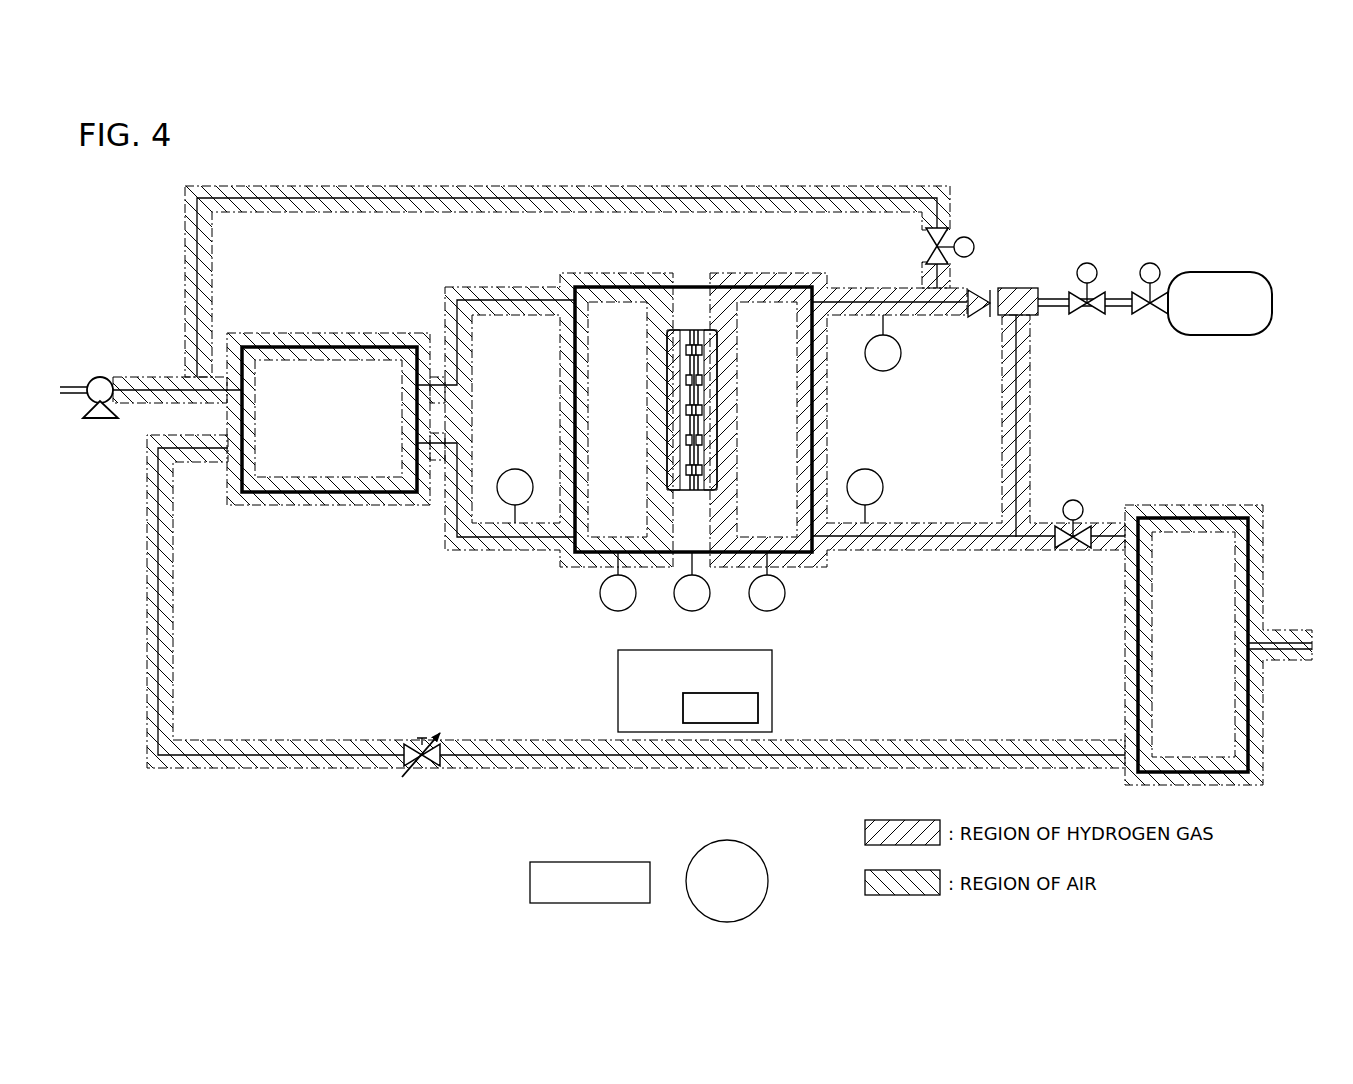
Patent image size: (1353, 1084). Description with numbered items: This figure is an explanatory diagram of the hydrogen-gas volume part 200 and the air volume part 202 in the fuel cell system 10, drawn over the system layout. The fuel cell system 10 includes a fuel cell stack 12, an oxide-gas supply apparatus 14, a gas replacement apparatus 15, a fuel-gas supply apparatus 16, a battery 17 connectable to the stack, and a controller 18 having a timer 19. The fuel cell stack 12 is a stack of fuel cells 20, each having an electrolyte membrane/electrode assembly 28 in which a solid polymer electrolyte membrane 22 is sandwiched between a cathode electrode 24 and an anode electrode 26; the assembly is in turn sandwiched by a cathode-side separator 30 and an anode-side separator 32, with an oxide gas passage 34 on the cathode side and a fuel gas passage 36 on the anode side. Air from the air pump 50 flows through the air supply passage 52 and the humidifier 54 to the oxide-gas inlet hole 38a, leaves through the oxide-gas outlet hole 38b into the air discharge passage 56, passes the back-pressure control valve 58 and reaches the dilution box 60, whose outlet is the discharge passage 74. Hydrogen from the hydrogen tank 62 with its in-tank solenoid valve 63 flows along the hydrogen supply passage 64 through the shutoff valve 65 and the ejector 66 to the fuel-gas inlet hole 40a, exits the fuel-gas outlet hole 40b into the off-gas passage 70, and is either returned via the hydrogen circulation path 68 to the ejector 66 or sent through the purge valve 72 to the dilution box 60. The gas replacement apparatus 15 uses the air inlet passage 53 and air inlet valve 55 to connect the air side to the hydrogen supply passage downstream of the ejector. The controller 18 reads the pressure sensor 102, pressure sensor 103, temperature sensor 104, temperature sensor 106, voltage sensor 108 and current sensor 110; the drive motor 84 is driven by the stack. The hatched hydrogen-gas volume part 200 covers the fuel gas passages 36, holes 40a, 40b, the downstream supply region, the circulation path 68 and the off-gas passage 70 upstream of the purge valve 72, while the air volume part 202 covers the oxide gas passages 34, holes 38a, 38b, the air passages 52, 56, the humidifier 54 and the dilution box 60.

The fuel cell system 10 is at (160, 180).
The fuel cell stack 12 is at (770, 272).
The oxide-gas supply apparatus 14 is at (265, 312).
The gas replacement apparatus 15 is at (958, 218).
The fuel-gas supply apparatus 16 is at (1272, 272).
The battery 17 is at (632, 862).
The controller 18 is at (772, 658).
The timer 19 is at (758, 702).
The fuel cell 20 is at (742, 150).
The solid polymer electrolyte membrane 22 is at (700, 457).
The cathode electrode 24 is at (705, 433).
The anode electrode 26 is at (700, 475).
The electrolyte membrane/electrode assembly 28 is at (693, 322).
The cathode-side separator 30 is at (673, 322).
The anode-side separator 32 is at (715, 322).
The oxide gas passage 34 is at (668, 393).
The fuel gas passage 36 is at (718, 372).
The oxide-gas inlet hole 38a is at (562, 280).
The oxide-gas outlet hole 38b is at (575, 556).
The fuel-gas inlet hole 40a is at (820, 335).
The fuel-gas outlet hole 40b is at (823, 552).
The air pump 50 is at (101, 378).
The air supply passage 52 is at (145, 385).
The air inlet passage 53 is at (426, 186).
The humidifier 54 is at (418, 347).
The air inlet valve 55 is at (972, 242).
The air discharge passage 56 is at (230, 742).
The back-pressure control valve 58 is at (425, 772).
The dilution box 60 is at (1240, 518).
The hydrogen tank 62 is at (1228, 272).
The in-tank solenoid valve 63 is at (1150, 263).
The hydrogen supply passage 64 is at (1064, 299).
The shutoff valve 65 is at (1087, 263).
The ejector 66 is at (1032, 316).
The hydrogen circulation path 68 is at (1030, 390).
The off-gas passage 70 is at (1112, 523).
The purge valve 72 is at (1073, 500).
The discharge passage 74 is at (1283, 635).
The drive motor 84 is at (757, 845).
The pressure sensor 102 is at (893, 371).
The pressure sensor 103 is at (507, 470).
The temperature sensor 104 is at (877, 470).
The temperature sensor 106 is at (754, 605).
The voltage sensor 108 is at (680, 605).
The current sensor 110 is at (606, 608).
The hydrogen-gas volume part 200 is at (903, 288).
The air volume part 202 is at (173, 596).